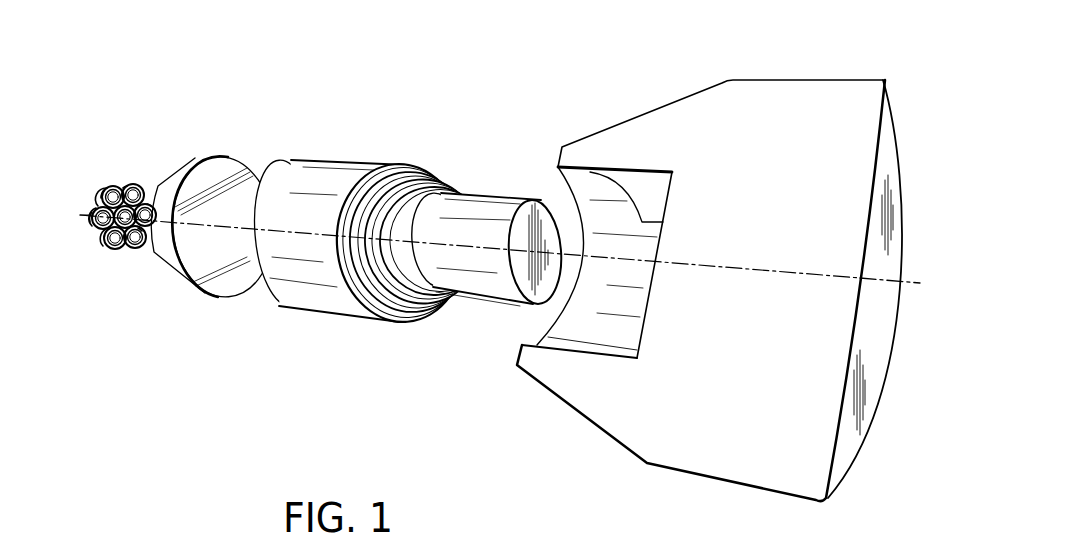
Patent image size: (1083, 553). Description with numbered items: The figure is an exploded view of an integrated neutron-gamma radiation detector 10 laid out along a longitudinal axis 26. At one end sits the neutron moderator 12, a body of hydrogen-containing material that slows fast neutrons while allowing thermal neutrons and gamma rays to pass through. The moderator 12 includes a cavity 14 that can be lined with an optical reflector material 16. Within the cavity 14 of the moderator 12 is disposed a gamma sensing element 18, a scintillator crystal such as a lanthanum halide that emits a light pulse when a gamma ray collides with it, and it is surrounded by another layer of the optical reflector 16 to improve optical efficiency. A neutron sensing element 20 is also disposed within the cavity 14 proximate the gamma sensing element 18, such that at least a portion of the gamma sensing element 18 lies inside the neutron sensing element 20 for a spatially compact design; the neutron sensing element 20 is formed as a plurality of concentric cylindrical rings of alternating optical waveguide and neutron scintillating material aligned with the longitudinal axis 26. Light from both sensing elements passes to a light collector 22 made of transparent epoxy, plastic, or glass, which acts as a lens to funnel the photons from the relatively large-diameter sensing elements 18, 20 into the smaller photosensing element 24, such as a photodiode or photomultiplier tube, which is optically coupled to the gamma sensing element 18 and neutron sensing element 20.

The integrated neutron-gamma radiation detector 10 is at (840, 54).
The neutron moderator 12 is at (741, 80).
The cavity 14 is at (588, 329).
The optical reflector material 16 is at (613, 185).
The gamma sensing element 18 is at (493, 186).
The neutron sensing element 20 is at (341, 148).
The light collector 22 is at (208, 160).
The photosensing element 24 is at (117, 172).
The longitudinal axis 26 is at (912, 274).